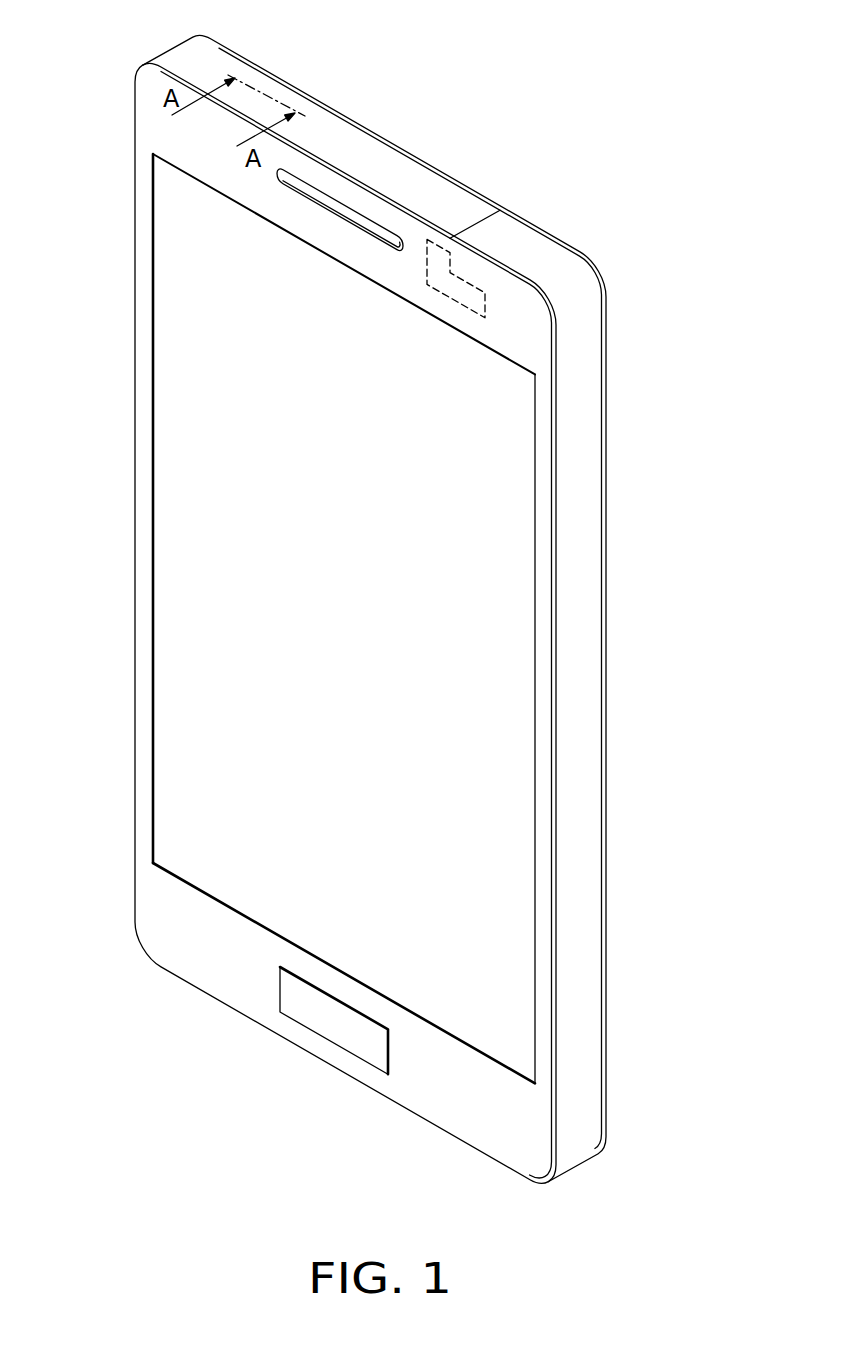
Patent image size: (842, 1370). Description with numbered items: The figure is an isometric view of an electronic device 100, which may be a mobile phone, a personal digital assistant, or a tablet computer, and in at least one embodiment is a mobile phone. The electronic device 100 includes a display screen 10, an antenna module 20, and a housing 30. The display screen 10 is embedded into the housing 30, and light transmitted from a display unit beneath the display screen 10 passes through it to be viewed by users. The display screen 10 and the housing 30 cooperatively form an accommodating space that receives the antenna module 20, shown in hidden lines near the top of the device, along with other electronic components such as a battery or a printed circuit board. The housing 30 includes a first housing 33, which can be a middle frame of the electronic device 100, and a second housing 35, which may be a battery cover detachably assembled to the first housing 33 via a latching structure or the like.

The electronic device 100 is at (512, 59).
The display screen 10 is at (143, 198).
The antenna module 20 is at (473, 283).
The housing 30 is at (697, 318).
The first housing 33 is at (585, 343).
The second housing 35 is at (603, 417).